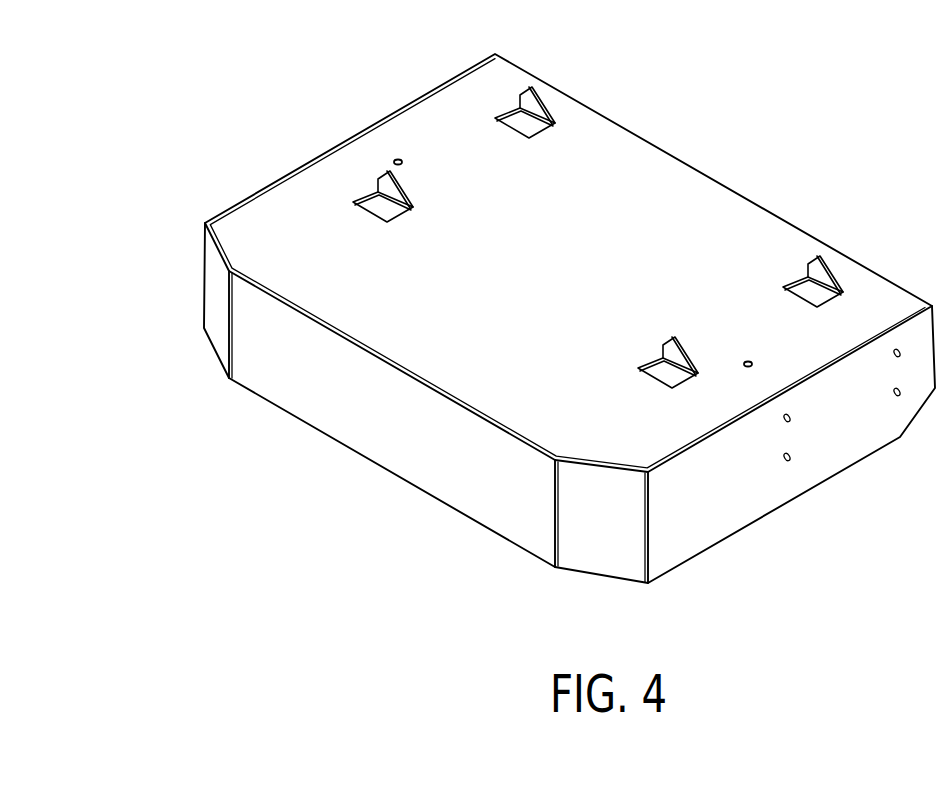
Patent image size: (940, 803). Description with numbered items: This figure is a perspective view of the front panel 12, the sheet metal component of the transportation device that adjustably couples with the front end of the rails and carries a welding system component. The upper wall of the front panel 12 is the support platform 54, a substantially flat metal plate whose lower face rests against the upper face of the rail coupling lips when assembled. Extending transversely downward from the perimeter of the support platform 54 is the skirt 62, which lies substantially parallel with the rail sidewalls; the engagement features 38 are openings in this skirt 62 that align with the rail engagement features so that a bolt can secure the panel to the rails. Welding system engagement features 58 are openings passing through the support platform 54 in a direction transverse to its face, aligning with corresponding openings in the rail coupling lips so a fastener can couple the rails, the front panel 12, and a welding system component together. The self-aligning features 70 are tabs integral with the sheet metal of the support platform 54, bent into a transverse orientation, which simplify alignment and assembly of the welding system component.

The front panel 12 is at (211, 69).
The engagement features 38 is at (888, 406).
The support platform 54 is at (252, 215).
The welding system engagement feature 58 is at (401, 159).
The skirt 62 is at (392, 470).
The self-aligning features 70 is at (542, 107).